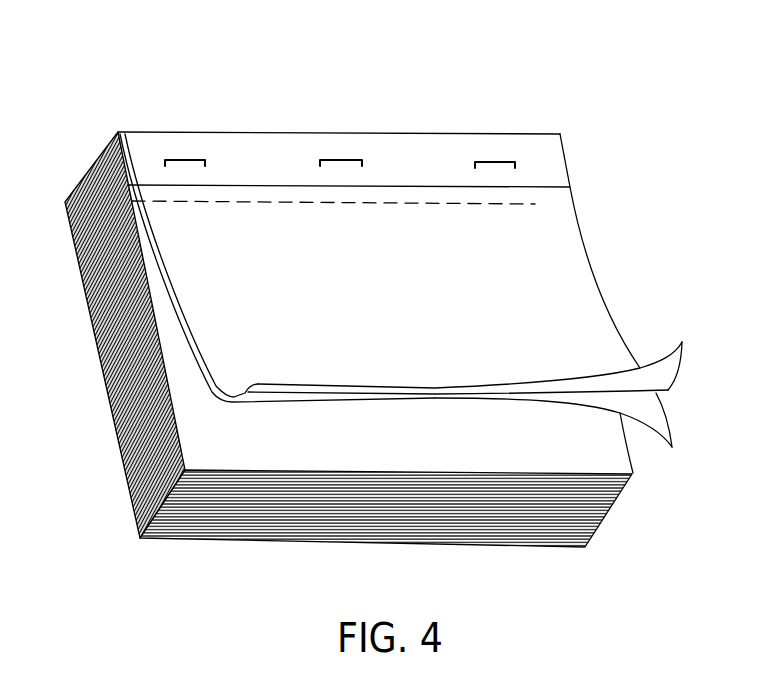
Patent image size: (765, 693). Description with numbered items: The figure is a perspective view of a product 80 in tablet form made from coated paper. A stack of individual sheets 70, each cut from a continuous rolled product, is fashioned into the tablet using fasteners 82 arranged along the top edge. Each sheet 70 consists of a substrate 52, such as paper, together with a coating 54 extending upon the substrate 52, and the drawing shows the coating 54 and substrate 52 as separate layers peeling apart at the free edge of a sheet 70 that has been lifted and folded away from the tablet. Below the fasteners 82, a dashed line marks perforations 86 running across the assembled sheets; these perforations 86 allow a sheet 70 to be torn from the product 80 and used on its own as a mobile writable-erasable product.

The product in tablet form 80 is at (550, 115).
The fasteners 82 is at (190, 158).
The perforations 86 is at (535, 204).
The sheets 70 is at (178, 352).
The coating 54 is at (682, 370).
The substrate 52 is at (663, 418).